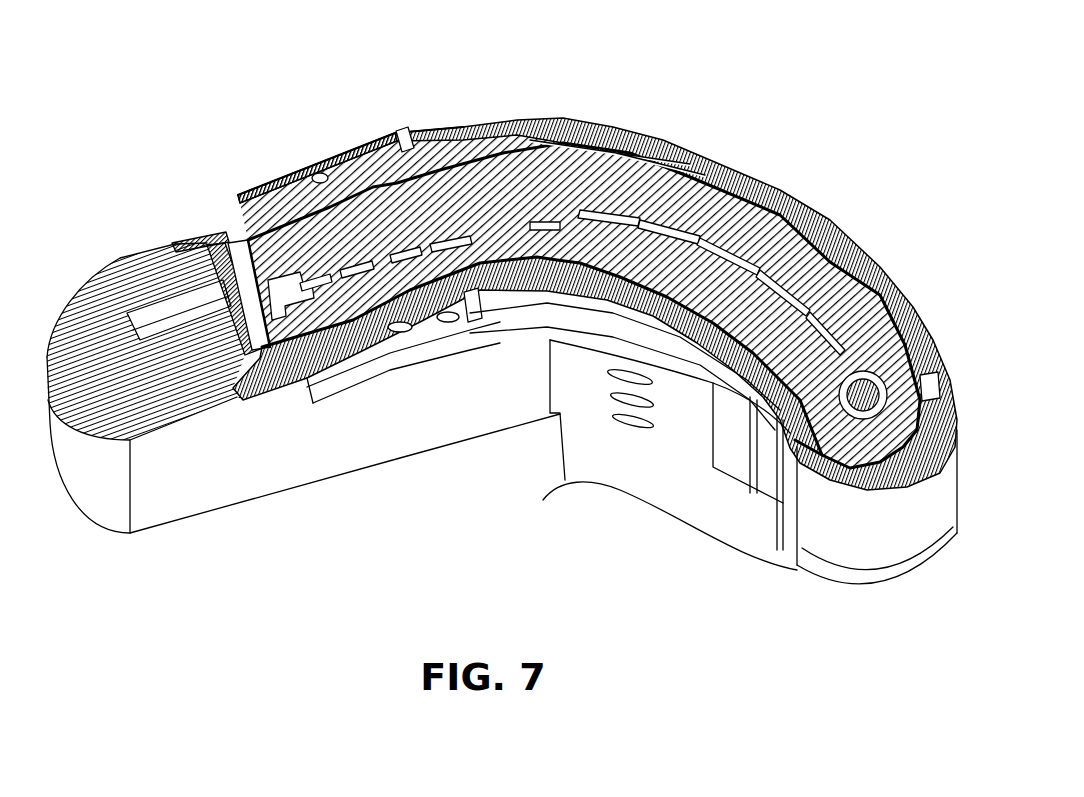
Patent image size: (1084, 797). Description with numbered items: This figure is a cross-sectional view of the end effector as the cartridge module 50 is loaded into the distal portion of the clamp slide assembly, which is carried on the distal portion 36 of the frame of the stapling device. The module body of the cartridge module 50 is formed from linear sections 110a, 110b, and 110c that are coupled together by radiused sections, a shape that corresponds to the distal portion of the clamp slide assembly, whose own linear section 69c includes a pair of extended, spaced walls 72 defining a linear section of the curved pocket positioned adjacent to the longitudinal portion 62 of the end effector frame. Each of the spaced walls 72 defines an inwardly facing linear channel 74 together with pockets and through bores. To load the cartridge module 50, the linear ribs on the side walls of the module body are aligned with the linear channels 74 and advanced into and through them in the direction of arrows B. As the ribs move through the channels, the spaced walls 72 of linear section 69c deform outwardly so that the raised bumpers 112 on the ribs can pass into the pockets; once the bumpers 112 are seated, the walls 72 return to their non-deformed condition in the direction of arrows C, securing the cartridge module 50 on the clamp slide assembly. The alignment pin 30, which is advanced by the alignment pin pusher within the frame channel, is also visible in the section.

The alignment pin 30 is at (867, 403).
The distal portion 36 is at (687, 433).
The cartridge module 50 is at (754, 156).
The longitudinal portion 62 is at (70, 457).
The linear section 69c is at (297, 168).
The spaced walls 72 is at (252, 192).
The linear channels 74 is at (323, 176).
The linear section 110a is at (928, 337).
The linear section 110b is at (687, 157).
The linear section 110c is at (263, 197).
The raised bumpers 112 is at (293, 187).
The arrows B is at (393, 118).
The arrows C is at (480, 334).